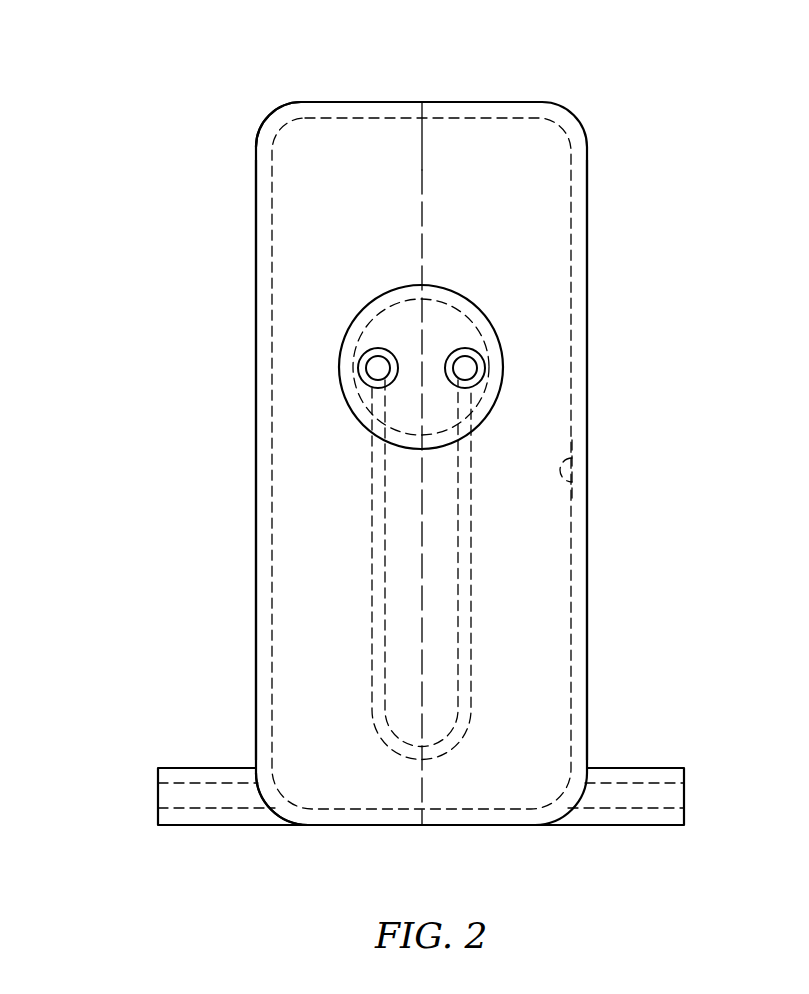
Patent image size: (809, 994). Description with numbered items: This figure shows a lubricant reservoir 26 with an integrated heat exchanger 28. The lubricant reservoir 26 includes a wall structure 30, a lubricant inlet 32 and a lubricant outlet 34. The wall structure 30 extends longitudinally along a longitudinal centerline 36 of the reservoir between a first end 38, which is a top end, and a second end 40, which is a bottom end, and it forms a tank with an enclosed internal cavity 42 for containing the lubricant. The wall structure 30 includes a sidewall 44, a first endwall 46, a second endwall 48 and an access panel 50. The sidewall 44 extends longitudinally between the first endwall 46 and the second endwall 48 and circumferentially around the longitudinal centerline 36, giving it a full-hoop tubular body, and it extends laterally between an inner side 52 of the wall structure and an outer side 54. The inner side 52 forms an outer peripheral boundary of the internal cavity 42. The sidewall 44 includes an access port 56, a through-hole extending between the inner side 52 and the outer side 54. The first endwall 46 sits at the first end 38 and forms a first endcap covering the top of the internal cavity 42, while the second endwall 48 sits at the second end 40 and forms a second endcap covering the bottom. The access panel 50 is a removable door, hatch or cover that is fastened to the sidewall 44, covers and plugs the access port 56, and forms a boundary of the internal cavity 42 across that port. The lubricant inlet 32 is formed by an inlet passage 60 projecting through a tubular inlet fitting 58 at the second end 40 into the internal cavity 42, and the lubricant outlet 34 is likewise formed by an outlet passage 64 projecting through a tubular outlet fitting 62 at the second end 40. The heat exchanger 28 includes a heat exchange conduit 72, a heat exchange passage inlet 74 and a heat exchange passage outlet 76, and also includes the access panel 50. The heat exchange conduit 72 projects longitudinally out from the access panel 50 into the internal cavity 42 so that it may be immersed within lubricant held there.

The lubricant reservoir 26 is at (578, 109).
The heat exchanger 28 is at (499, 570).
The wall structure 30 is at (589, 206).
The lubricant inlet 32 is at (644, 746).
The lubricant outlet 34 is at (199, 744).
The longitudinal centerline 36 is at (422, 148).
The first end 38 is at (388, 102).
The second end 40 is at (316, 825).
The internal cavity 42 is at (585, 402).
The sidewall 44 is at (256, 250).
The first endwall 46 is at (317, 102).
The second endwall 48 is at (370, 825).
The access panel 50 is at (427, 285).
The inner side 52 is at (572, 485).
The outer side 54 is at (587, 452).
The access port 56 is at (455, 304).
The inlet fitting 58 is at (644, 746).
The inlet passage 60 is at (663, 796).
The outlet fitting 62 is at (199, 744).
The outlet passage 64 is at (182, 797).
The heat exchange conduit 72 is at (478, 617).
The heat exchange passage inlet 74 is at (362, 354).
The heat exchange passage outlet 76 is at (482, 355).